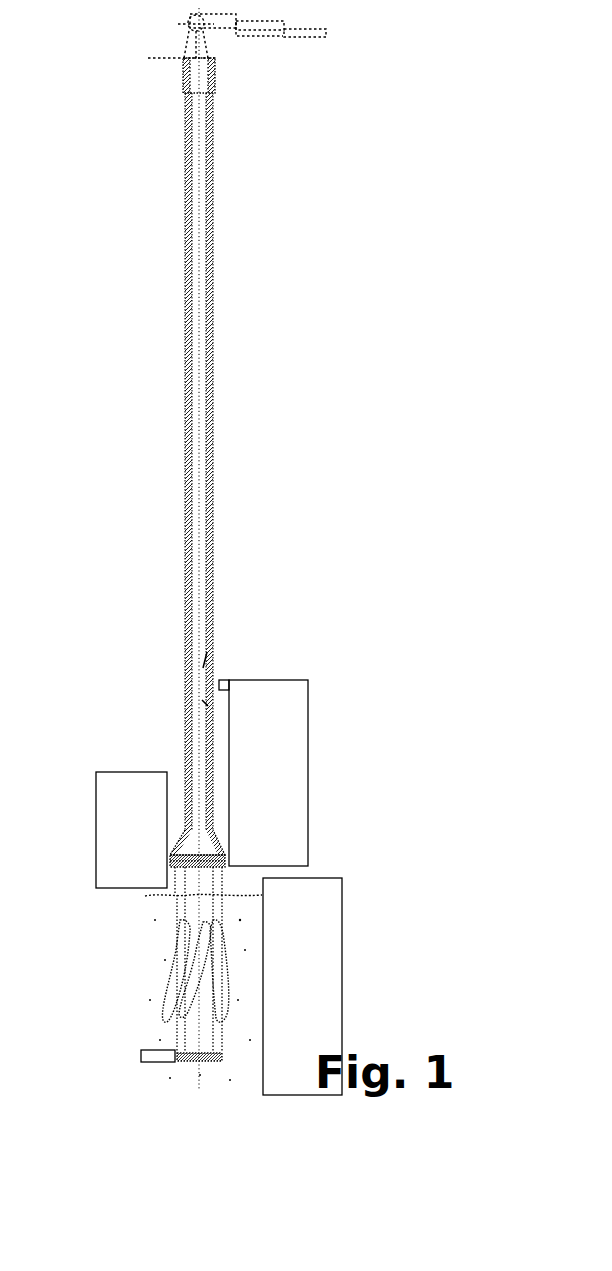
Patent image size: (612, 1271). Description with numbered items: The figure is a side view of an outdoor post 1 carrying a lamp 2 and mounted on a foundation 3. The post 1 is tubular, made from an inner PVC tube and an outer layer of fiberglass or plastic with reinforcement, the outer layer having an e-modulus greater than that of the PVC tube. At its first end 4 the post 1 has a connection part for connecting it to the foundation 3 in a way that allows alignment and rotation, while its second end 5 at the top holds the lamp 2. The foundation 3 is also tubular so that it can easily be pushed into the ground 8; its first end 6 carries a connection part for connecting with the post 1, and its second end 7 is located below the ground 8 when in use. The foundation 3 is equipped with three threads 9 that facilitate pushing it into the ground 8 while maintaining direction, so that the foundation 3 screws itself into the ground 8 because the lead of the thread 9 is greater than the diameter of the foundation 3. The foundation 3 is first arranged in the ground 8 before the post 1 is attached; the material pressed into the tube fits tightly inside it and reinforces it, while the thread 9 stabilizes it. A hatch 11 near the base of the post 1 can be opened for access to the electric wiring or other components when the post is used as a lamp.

The outdoor post 1 is at (175, 373).
The lamp 2 is at (285, 37).
The foundation 3 is at (207, 882).
The first end 4 is at (178, 830).
The second end 5 is at (170, 97).
The first end 6 is at (165, 876).
The second end 7 is at (170, 1050).
The ground 8 is at (243, 896).
The threads 9 is at (193, 978).
The hatch 11 is at (203, 681).